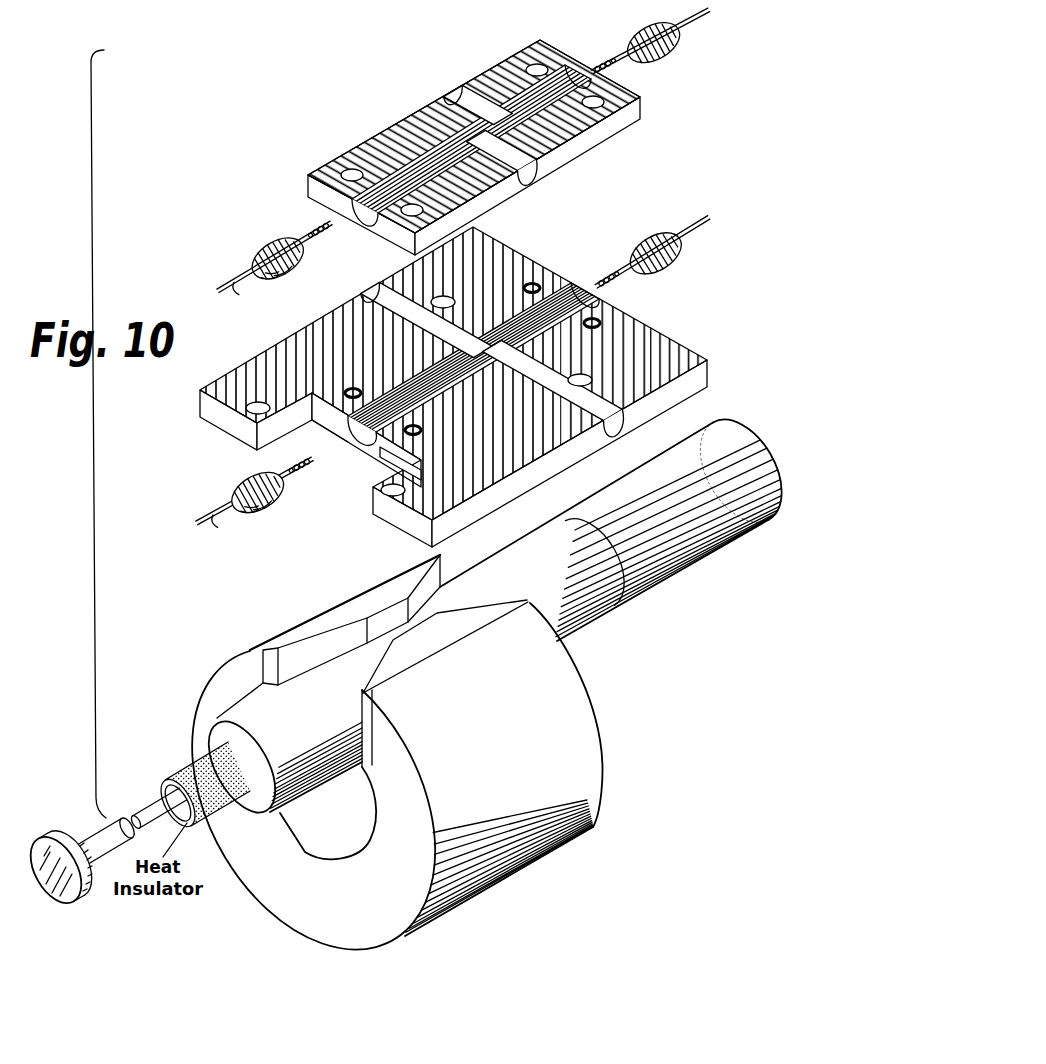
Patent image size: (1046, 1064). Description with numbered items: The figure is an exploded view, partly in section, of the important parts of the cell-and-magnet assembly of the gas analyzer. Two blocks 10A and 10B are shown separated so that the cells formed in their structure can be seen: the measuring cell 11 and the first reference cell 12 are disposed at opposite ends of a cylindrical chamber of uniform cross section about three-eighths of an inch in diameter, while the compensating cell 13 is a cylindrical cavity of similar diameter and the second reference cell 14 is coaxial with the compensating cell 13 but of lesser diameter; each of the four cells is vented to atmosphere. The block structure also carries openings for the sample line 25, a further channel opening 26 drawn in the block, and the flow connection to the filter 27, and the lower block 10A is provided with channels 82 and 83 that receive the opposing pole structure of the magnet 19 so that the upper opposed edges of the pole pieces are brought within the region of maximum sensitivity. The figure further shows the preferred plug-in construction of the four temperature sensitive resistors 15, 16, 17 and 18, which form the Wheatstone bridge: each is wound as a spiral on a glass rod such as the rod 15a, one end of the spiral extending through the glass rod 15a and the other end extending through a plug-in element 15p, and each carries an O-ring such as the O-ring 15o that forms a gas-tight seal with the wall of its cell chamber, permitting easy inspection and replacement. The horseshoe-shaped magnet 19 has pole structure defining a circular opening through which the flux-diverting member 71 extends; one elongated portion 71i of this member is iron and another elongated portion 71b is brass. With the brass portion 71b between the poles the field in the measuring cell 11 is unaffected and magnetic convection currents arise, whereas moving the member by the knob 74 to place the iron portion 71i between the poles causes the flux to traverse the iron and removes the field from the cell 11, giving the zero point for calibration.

The block 10A is at (478, 387).
The block 10B is at (447, 143).
The measuring cell 11 is at (356, 438).
The first reference cell 12 is at (575, 285).
The compensating cell 13 is at (345, 198).
The second reference cell 14 is at (513, 117).
The temperature sensitive resistor 15 is at (249, 509).
The glass rod 15a is at (224, 503).
The O-ring 15o is at (277, 509).
The plug-in element 15p is at (252, 504).
The temperature sensitive resistor 16 is at (613, 278).
The temperature sensitive resistor 17 is at (315, 238).
The temperature sensitive resistor 18 is at (600, 62).
The magnet 19 is at (590, 798).
The sample line 25 is at (597, 423).
The cross channel 26 is at (381, 294).
The filter 27 is at (437, 117).
The flux-diverting member 71 is at (611, 530).
The iron portion 71i is at (660, 574).
The brass portion 71b is at (307, 778).
The knob 74 is at (53, 893).
The channel 82 is at (337, 423).
The channel 83 is at (393, 461).